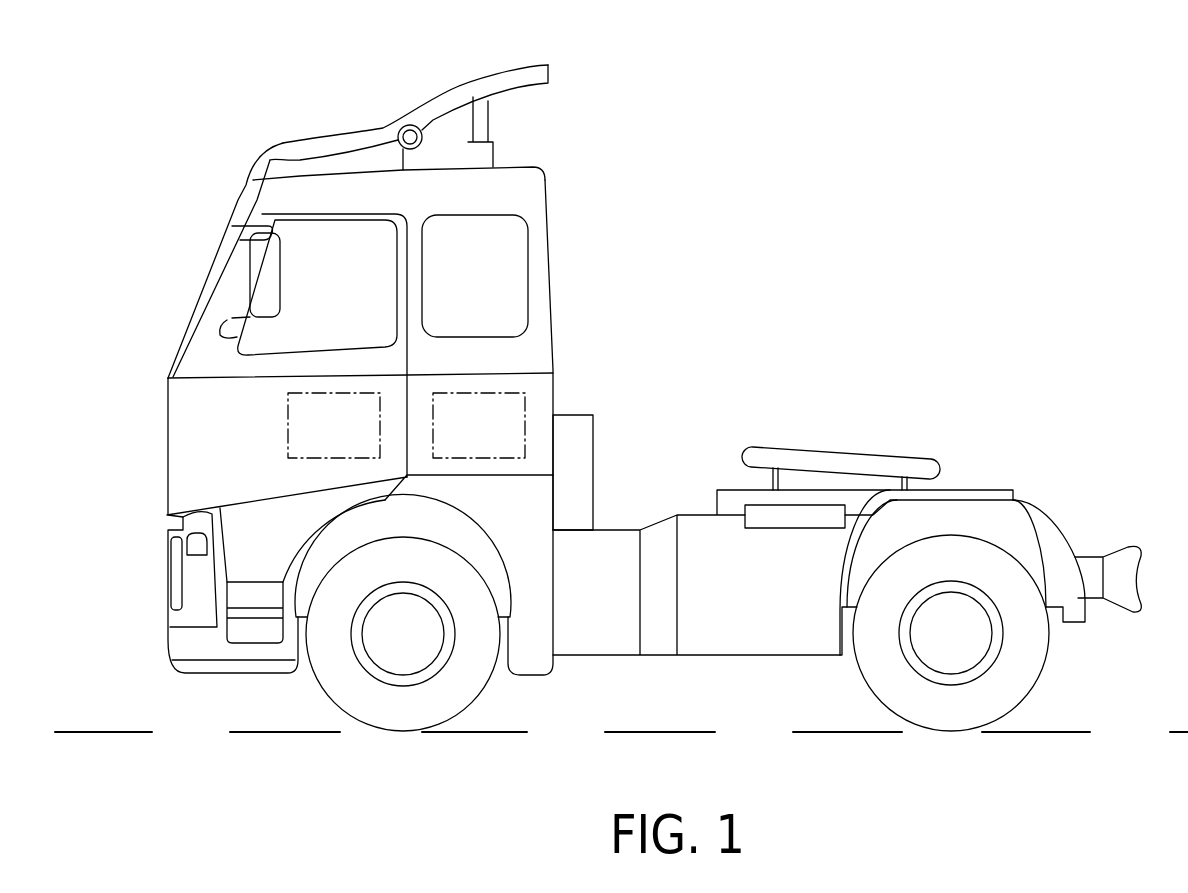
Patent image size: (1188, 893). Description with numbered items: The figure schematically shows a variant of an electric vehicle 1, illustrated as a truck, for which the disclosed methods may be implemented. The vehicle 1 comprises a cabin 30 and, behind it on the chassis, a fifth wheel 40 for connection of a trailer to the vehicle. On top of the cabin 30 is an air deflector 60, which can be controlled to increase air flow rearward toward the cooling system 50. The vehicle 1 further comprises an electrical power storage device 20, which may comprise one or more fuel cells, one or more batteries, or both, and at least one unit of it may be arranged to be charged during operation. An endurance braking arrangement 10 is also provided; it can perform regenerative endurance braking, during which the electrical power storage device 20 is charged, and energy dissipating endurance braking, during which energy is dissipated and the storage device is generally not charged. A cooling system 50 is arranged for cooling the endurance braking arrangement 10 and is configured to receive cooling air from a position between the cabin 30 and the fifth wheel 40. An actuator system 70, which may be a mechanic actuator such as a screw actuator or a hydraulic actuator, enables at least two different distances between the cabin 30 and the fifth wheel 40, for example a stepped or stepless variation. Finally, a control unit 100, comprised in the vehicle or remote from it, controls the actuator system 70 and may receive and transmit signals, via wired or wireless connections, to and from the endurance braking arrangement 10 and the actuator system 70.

The vehicle 1 is at (218, 125).
The control unit 100 is at (834, 118).
The endurance braking arrangement 10 is at (288, 447).
The electrical power storage device 20 is at (525, 405).
The cabin 30 is at (548, 178).
The fifth wheel 40 is at (877, 458).
The cooling system 50 is at (593, 435).
The air deflector 60 is at (385, 80).
The actuator system 70 is at (795, 518).